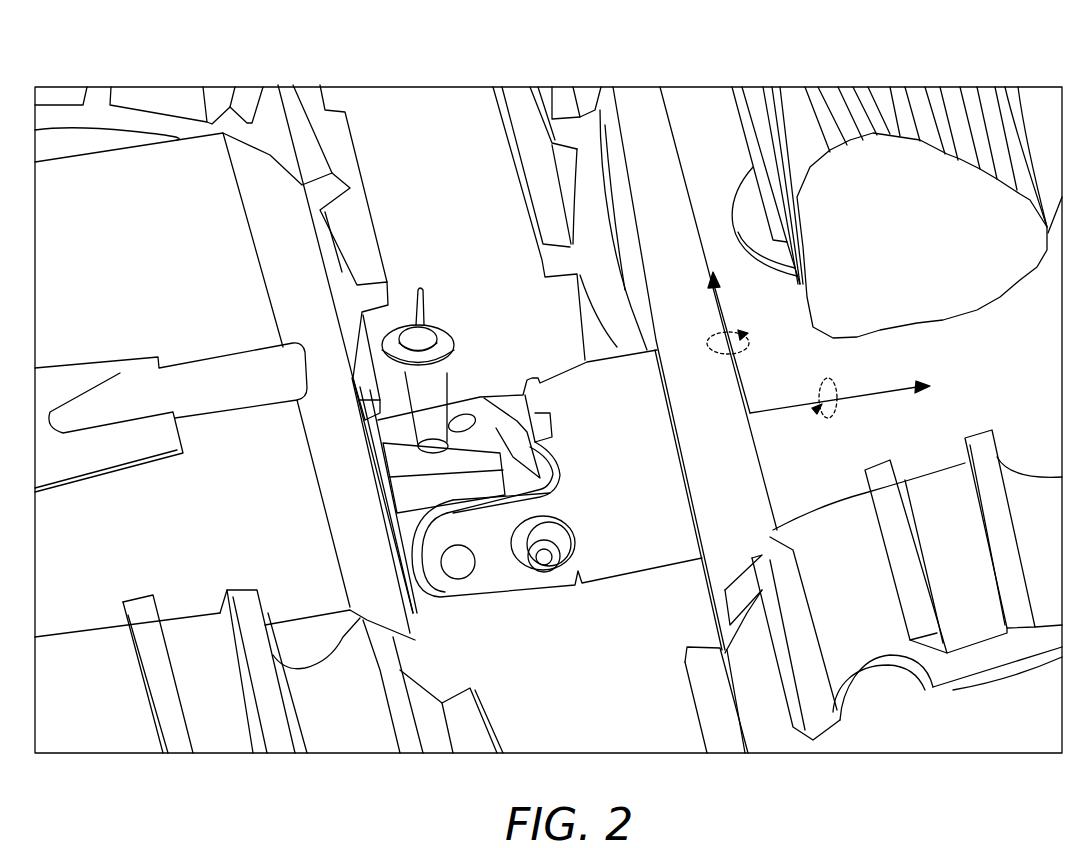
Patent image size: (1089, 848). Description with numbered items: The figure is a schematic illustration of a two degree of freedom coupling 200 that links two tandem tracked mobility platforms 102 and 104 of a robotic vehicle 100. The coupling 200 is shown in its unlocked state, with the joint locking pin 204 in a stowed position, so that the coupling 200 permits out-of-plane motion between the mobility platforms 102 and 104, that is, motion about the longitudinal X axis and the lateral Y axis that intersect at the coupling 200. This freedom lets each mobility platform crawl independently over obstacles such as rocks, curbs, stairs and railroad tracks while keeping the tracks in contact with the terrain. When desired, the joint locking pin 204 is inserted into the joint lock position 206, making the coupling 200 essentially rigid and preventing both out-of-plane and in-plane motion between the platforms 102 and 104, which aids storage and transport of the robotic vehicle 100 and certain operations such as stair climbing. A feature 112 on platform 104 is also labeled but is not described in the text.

The robotic vehicle 100 is at (450, 50).
The tracked mobility platform 102 is at (832, 485).
The tracked mobility platform 104 is at (130, 254).
The hook / clamp feature 112 is at (131, 495).
The two degree of freedom coupling 200 is at (573, 668).
The joint locking pin 204 is at (431, 262).
The joint lock position 206 is at (463, 590).